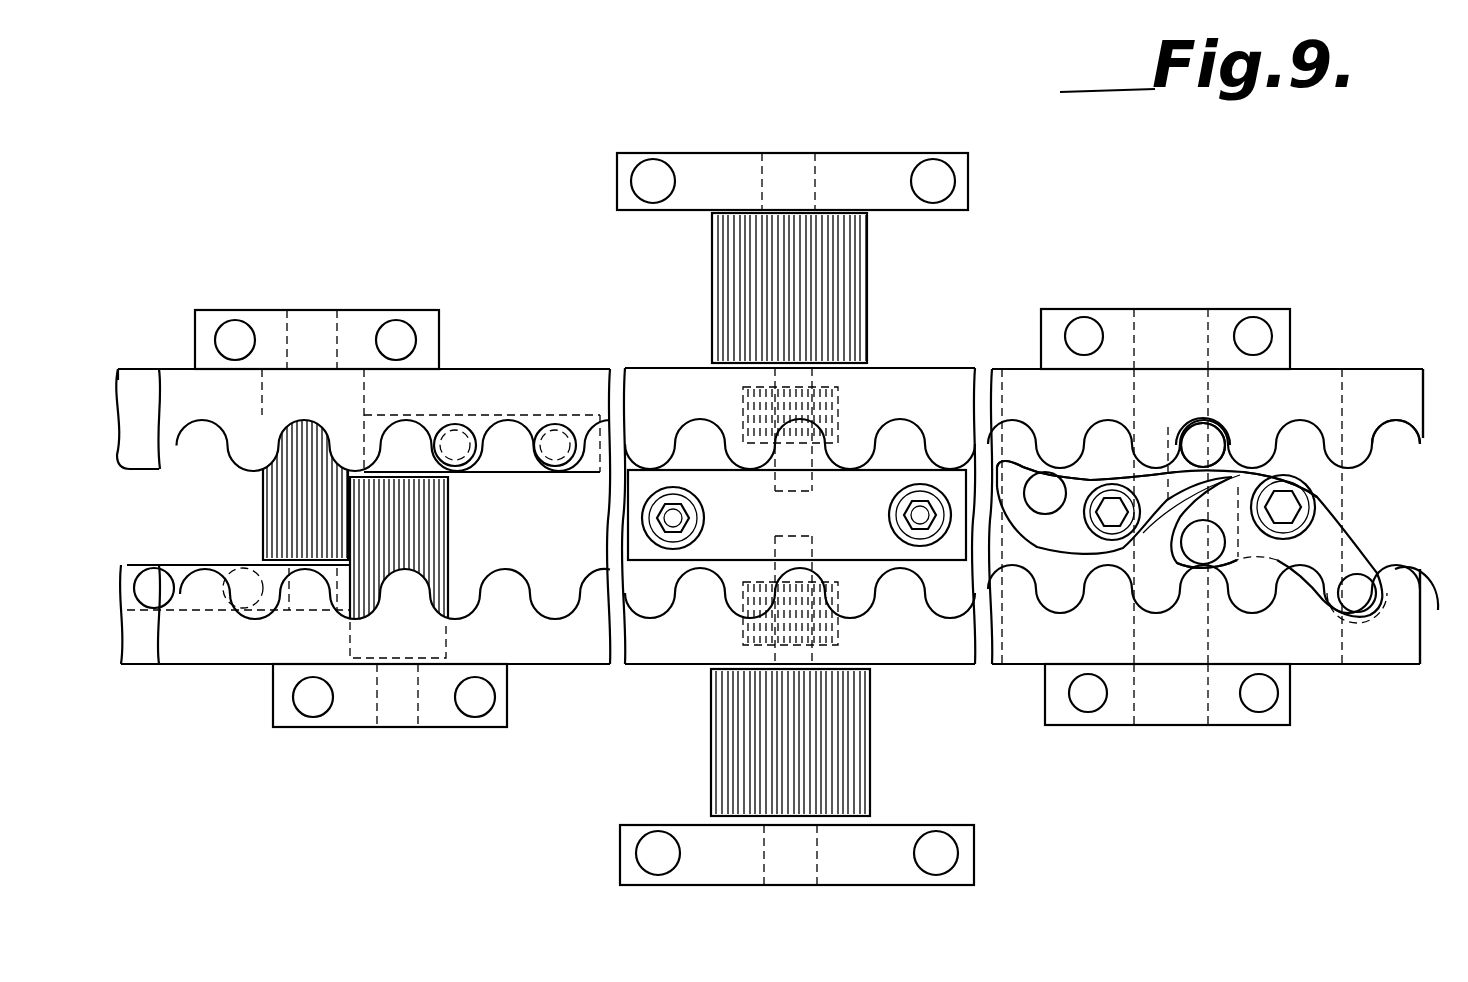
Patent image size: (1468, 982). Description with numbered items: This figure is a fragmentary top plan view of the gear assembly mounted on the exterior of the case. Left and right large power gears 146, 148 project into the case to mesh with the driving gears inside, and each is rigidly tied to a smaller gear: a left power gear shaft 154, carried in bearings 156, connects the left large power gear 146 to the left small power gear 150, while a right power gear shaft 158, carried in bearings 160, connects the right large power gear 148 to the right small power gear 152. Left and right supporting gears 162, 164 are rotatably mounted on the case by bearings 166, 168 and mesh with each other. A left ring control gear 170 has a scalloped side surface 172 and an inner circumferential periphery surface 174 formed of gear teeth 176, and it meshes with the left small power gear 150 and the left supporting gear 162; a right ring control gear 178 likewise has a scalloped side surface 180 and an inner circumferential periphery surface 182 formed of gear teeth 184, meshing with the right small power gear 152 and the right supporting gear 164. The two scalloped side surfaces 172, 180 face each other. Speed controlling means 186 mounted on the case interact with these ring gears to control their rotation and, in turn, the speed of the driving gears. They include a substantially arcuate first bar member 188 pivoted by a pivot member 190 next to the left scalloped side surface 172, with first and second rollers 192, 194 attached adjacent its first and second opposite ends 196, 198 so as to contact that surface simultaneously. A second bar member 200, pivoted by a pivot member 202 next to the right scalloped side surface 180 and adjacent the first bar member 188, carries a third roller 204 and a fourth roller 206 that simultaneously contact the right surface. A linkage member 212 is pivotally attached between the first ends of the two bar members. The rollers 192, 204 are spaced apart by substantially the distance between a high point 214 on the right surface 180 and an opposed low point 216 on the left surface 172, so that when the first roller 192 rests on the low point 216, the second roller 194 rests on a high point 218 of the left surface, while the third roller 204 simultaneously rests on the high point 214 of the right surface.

The left large power gear 146 is at (718, 273).
The right large power gear 148 is at (724, 747).
The left small power gear 150 is at (833, 412).
The right small power gear 152 is at (866, 632).
The left power gear shaft 154 is at (797, 172).
The bearings 156 is at (892, 163).
The right power gear shaft 158 is at (806, 870).
The bearings 160 is at (894, 831).
The left supporting gear 162 is at (282, 504).
The right supporting gear 164 is at (438, 526).
The bearings 166 is at (268, 324).
The bearings 168 is at (518, 460).
The left ring control gear 170 is at (1423, 393).
The scalloped side surface 172 is at (1382, 427).
The inner circumferential periphery surface 174 is at (159, 439).
The gear teeth 176 is at (118, 372).
The right ring control gear 178 is at (1405, 636).
The scalloped side surface 180 is at (1425, 578).
The inner circumferential periphery surface 182 is at (116, 655).
The gear teeth 184 is at (140, 572).
The speed controlling means 186 is at (1323, 513).
The first bar member 188 is at (1047, 477).
The pivot member 190 is at (1102, 525).
The first contacting means or roller 192 is at (1182, 442).
The second contacting means or roller 194 is at (1038, 478).
The first end 196 is at (1205, 414).
The second end 198 is at (1003, 462).
The second bar member 200 is at (1350, 543).
The pivot member 202 is at (1292, 500).
The third contacting means or roller 204 is at (1188, 552).
The fourth contacting means or roller 206 is at (1260, 543).
The linkage member 212 is at (1223, 465).
The high point 214 is at (1258, 567).
The low point 216 is at (1222, 418).
The high point 218 is at (1053, 470).